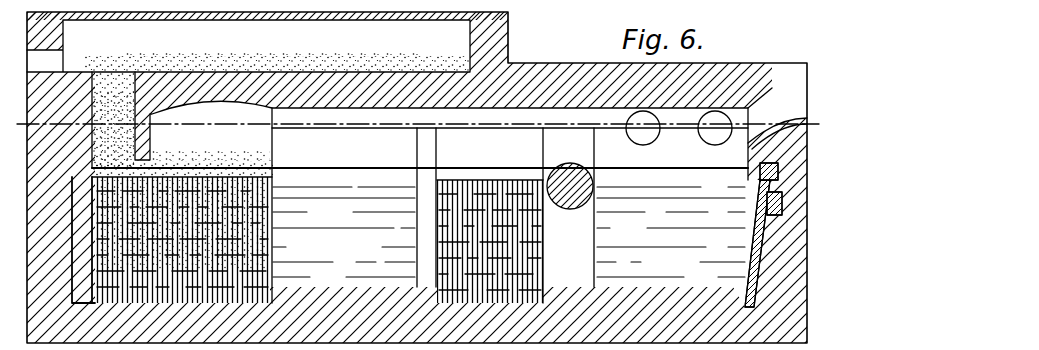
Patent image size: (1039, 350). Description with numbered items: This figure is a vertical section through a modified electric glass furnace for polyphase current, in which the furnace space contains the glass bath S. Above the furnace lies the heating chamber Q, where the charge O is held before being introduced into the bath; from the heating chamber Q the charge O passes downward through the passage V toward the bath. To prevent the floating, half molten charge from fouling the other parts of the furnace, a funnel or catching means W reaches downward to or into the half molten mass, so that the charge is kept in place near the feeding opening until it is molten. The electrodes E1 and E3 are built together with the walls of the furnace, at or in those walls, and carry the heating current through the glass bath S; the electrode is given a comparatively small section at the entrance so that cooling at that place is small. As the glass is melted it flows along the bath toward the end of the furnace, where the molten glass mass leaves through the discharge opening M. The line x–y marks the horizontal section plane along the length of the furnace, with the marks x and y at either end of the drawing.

The heating chamber Q is at (266, 46).
The charge O is at (279, 64).
The vertical passage V is at (113, 120).
The funnel W is at (148, 143).
The electrode E1 is at (200, 220).
The electrode E3 is at (474, 193).
The glass bath S is at (509, 232).
The discharge opening M is at (777, 103).
The section line x is at (410, 120).
The section line y is at (812, 112).